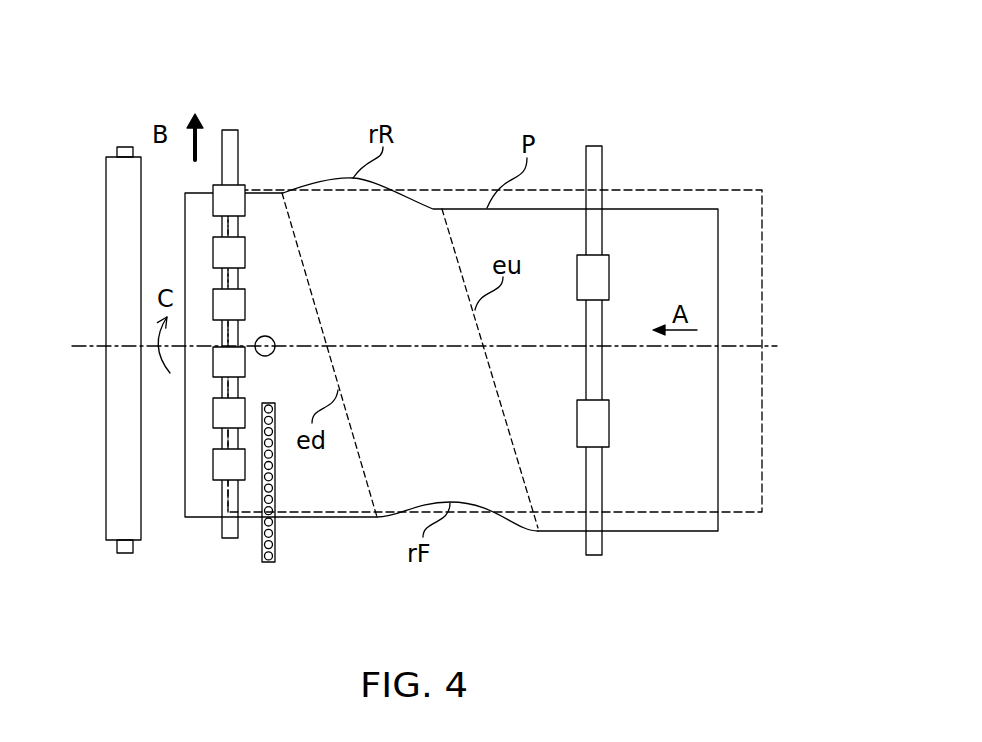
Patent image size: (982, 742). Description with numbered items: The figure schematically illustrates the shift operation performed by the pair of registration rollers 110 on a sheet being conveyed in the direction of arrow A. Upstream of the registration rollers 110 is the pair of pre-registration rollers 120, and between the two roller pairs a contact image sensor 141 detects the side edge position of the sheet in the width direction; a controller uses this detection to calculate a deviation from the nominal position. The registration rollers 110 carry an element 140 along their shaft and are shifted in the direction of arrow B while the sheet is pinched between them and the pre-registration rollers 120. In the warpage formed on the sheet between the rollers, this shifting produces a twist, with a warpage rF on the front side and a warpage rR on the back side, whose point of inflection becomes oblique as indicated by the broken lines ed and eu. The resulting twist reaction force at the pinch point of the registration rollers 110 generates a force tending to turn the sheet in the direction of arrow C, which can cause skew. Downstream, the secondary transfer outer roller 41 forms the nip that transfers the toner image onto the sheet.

The secondary transfer outer roller 41 is at (105, 548).
The pair of registration rollers 110 is at (207, 532).
The pair of pre-registration rollers 120 is at (613, 468).
The sensor 140 is at (265, 336).
The contact image sensor (CIS) 141 is at (273, 563).